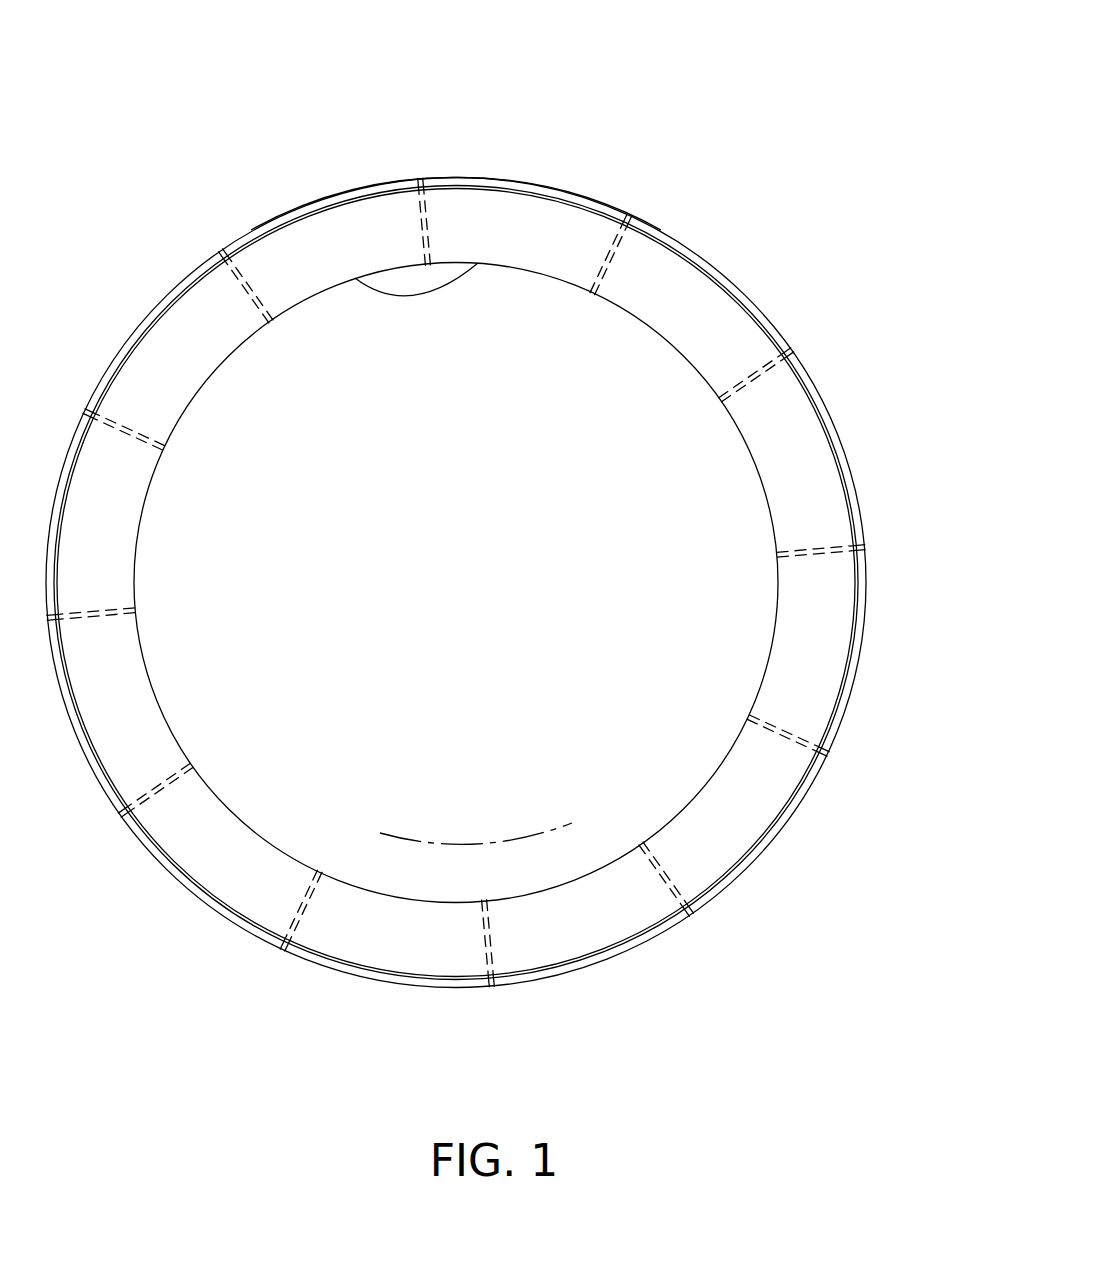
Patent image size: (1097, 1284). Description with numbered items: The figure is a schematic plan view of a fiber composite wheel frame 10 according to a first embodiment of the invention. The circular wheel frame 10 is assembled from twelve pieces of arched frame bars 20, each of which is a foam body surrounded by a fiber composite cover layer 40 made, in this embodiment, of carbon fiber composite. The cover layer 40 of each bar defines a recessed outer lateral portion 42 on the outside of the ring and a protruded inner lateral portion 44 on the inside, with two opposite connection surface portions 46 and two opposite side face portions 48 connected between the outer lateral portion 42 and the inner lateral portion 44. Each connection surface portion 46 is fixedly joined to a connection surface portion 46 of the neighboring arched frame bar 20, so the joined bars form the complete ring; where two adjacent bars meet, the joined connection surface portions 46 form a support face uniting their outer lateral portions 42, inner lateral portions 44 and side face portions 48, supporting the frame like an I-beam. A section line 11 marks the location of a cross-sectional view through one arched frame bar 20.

The fiber composite wheel frame 10 is at (718, 85).
The section line 11 is at (365, 873).
The arched frame bar 20 is at (580, 182).
The fiber composite cover layer 40 is at (534, 184).
The recessed outer lateral portion 42 is at (466, 177).
The protruded inner lateral portion 44 is at (358, 278).
The connection surface portion 46 is at (423, 220).
The side face portion 48 is at (572, 238).